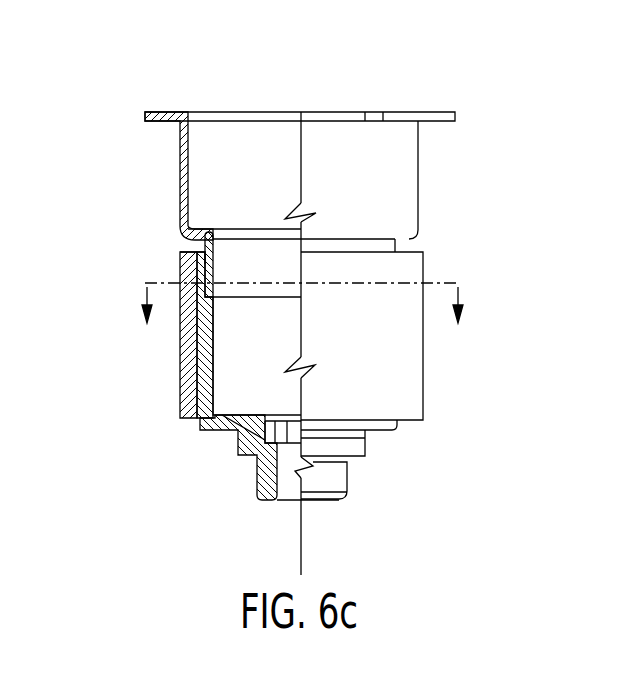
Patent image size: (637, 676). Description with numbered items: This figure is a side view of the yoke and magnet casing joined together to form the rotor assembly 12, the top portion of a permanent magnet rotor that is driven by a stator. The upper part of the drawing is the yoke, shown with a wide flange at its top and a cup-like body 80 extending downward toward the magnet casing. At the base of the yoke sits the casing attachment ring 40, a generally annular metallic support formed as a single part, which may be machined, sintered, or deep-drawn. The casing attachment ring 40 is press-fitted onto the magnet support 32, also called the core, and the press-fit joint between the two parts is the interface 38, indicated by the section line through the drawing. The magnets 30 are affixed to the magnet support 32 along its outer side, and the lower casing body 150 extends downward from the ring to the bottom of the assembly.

The rotor assembly 12 is at (90, 100).
The flange / strainer body 80 is at (185, 183).
The casing attachment ring 40 is at (205, 240).
The interface 38 is at (197, 260).
The magnet support 32 is at (187, 366).
The magnets 30 is at (195, 392).
The drain body 150 is at (423, 413).